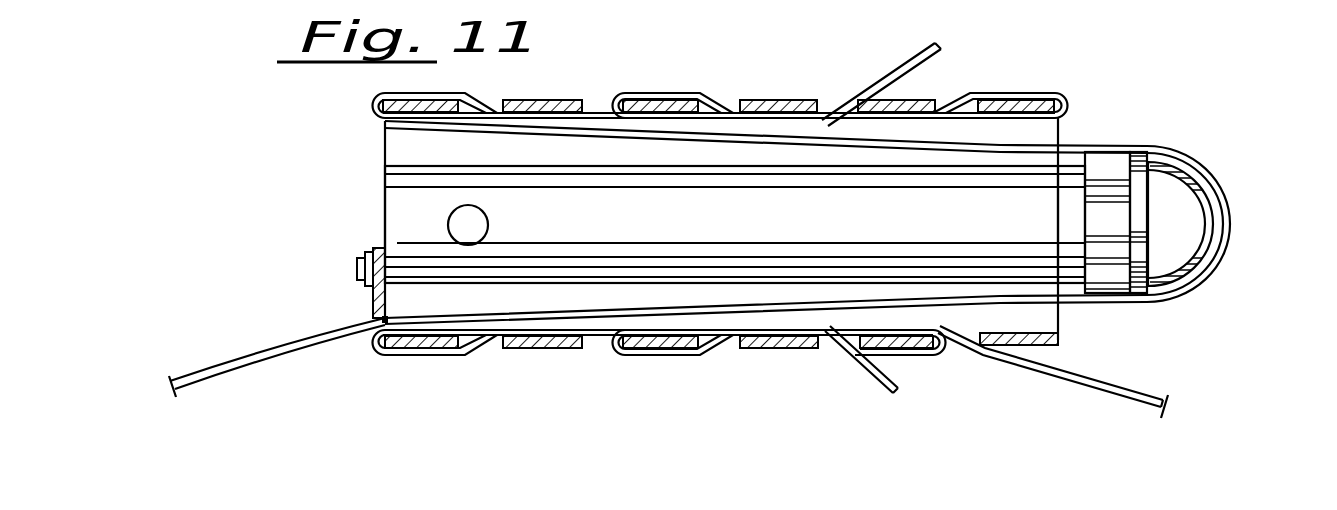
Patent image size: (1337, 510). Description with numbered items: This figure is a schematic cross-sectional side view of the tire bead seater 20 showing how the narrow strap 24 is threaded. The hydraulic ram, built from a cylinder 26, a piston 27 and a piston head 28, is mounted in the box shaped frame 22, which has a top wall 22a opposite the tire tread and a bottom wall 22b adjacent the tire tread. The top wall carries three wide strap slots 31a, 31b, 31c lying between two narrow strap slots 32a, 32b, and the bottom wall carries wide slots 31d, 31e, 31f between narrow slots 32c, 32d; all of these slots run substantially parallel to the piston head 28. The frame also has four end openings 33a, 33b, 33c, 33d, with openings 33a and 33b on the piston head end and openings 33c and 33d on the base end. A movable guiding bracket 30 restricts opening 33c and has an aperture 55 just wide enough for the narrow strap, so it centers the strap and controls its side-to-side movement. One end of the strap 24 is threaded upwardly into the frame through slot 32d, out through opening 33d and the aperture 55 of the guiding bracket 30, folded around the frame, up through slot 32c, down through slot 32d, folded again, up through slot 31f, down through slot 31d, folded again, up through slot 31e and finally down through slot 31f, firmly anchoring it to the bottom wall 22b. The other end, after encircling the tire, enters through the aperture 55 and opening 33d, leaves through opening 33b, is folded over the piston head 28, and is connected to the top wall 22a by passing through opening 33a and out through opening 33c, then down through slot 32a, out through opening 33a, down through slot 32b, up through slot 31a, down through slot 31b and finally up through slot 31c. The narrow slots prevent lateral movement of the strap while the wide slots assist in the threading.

The tire bead seater 20 is at (1240, 242).
The frame 22 is at (376, 181).
The top wall 22a is at (665, 100).
The bottom wall 22b is at (664, 345).
The narrow flexible strap 24 is at (916, 54).
The cylinder 26 is at (1068, 168).
The piston 27 is at (1103, 193).
The piston head 28 is at (1190, 170).
The guiding bracket 30 is at (374, 250).
The wide strap slot 31a is at (595, 107).
The wide strap slot 31b is at (727, 103).
The wide strap slot 31c is at (827, 100).
The wide strap slot 31d is at (597, 343).
The wide strap slot 31e is at (730, 348).
The wide strap slot 31f is at (827, 348).
The narrow strap slot 32a is at (490, 102).
The narrow strap slot 32b is at (941, 100).
The narrow strap slot 32c is at (493, 350).
The narrow strap slot 32d is at (953, 347).
The end opening 33a is at (1062, 128).
The end opening 33b is at (1062, 313).
The end opening 33c is at (388, 143).
The end opening 33d is at (380, 300).
The aperture 55 is at (373, 320).